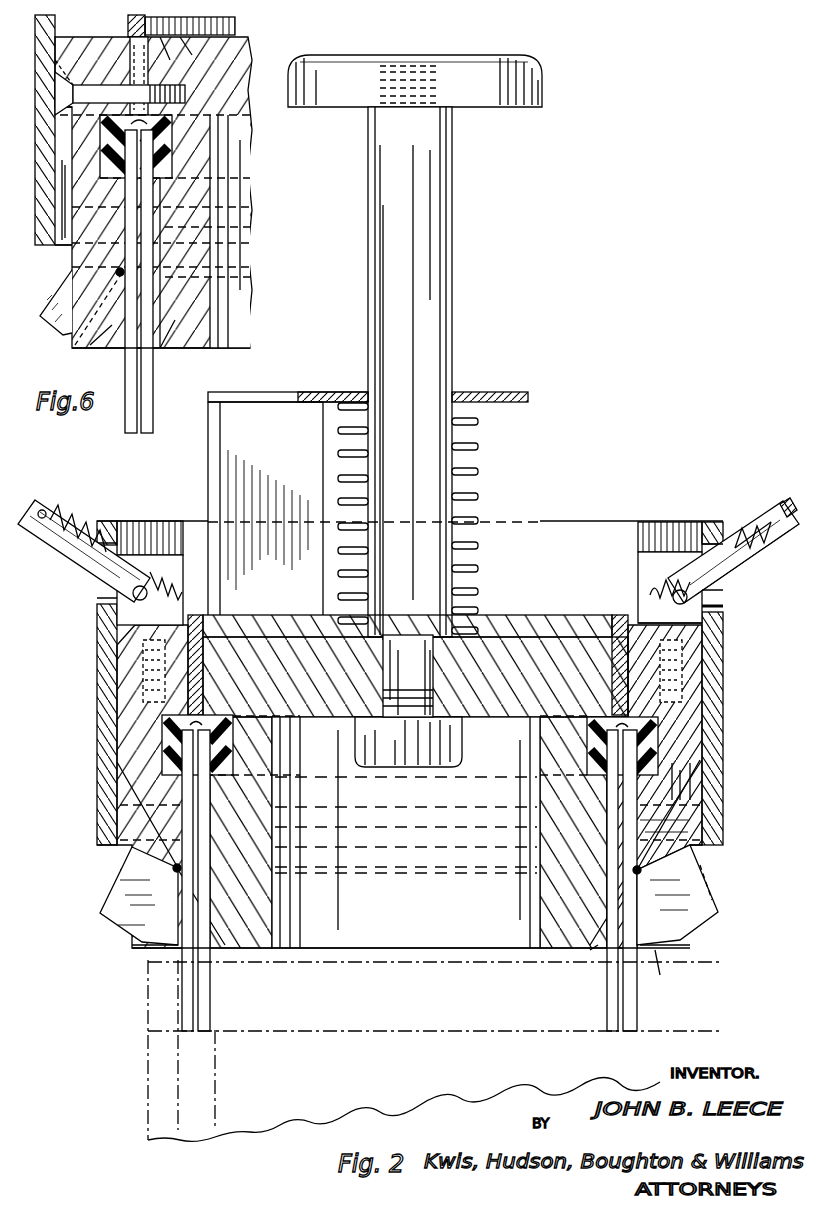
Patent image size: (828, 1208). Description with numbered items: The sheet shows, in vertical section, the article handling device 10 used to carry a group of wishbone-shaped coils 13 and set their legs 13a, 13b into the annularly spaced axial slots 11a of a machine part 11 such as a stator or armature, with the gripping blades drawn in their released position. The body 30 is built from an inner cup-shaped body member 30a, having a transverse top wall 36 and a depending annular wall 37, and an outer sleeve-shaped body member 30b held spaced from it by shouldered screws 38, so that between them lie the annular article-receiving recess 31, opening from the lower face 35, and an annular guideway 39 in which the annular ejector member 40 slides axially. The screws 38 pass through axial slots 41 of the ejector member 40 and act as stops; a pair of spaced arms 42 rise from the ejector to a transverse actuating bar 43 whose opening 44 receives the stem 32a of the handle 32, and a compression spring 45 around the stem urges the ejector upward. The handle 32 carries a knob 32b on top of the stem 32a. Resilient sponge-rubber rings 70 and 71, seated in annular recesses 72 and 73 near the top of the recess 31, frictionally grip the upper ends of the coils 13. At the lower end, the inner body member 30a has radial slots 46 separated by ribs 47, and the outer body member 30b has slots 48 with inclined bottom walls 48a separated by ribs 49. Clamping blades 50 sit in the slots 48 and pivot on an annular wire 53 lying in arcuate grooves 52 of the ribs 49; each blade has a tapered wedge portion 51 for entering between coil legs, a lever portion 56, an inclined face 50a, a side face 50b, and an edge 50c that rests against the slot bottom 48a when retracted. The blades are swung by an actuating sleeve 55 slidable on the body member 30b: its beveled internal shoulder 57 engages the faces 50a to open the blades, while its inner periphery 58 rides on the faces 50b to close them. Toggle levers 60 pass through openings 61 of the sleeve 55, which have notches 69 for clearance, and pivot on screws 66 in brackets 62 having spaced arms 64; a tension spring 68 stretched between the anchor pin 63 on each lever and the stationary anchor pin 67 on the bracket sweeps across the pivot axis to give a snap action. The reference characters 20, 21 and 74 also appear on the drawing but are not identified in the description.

In FIG. 2, the article handling device 10 is at (570, 521).
In FIG. 2, the machine part 11 is at (148, 1040).
In FIG. 2, the axial slots 11a is at (215, 1072).
In FIG. 6, the coils 13 is at (165, 222).
In FIG. 2, the coils 13 is at (606, 792).
In FIG. 6, the coil leg 13a is at (153, 420).
In FIG. 2, the coil leg 13a is at (607, 1012).
In FIG. 6, the coil leg 13b is at (128, 425).
In FIG. 2, the coil leg 13b is at (637, 1002).
In FIG. 2, the stem 20 is at (433, 668).
In FIG. 2, the stem head 21 is at (462, 748).
In FIG. 6, the body 30 is at (250, 25).
In FIG. 2, the body 30 is at (548, 616).
In FIG. 6, the inner body member 30a is at (252, 45).
In FIG. 2, the inner body member 30a is at (500, 616).
In FIG. 6, the outer body member 30b is at (75, 45).
In FIG. 2, the outer body member 30b is at (700, 668).
In FIG. 6, the article-receiving recess 31 is at (160, 262).
In FIG. 2, the article-receiving recess 31 is at (606, 886).
In FIG. 2, the handle 32 is at (542, 90).
In FIG. 2, the stem 32a is at (452, 265).
In FIG. 2, the knob 32b is at (482, 56).
In FIG. 6, the lower end face 35 is at (200, 349).
In FIG. 2, the lower end face 35 is at (560, 948).
In FIG. 6, the transverse top wall 36 is at (248, 84).
In FIG. 6, the depending annular wall 37 is at (232, 190).
In FIG. 6, the shouldered screws 38 is at (110, 78).
In FIG. 2, the annular guideway 39 is at (618, 680).
In FIG. 6, the annular ejector member 40 is at (150, 25).
In FIG. 2, the annular ejector member 40 is at (614, 658).
In FIG. 6, the axial slots 41 is at (148, 60).
In FIG. 2, the spaced arms 42 is at (208, 470).
In FIG. 2, the transverse actuating bar 43 is at (325, 392).
In FIG. 2, the opening 44 is at (490, 392).
In FIG. 2, the compression spring 45 is at (480, 447).
In FIG. 2, the radial slots 46 is at (595, 955).
In FIG. 6, the teeth or ribs 47 is at (163, 349).
In FIG. 2, the slots 48 is at (690, 940).
In FIG. 2, the inclined bottom walls 48a is at (700, 762).
In FIG. 6, the teeth or ribs 49 is at (110, 348).
In FIG. 6, the clamping blades 50 is at (60, 330).
In FIG. 2, the clamping blades 50 is at (125, 885).
In FIG. 2, the inclined side faces 50a is at (690, 822).
In FIG. 2, the side faces 50b is at (712, 884).
In FIG. 2, the edge portions 50c is at (632, 826).
In FIG. 2, the tapered wedge portions 51 is at (665, 972).
In FIG. 6, the arcuate grooves 52 is at (116, 270).
In FIG. 6, the annular pivot wire 53 is at (118, 280).
In FIG. 2, the annular pivot wire 53 is at (641, 870).
In FIG. 6, the actuating sleeve 55 is at (45, 168).
In FIG. 2, the actuating sleeve 55 is at (723, 684).
In FIG. 2, the lever portions 56 is at (690, 800).
In FIG. 6, the beveled internal shoulder 57 is at (62, 215).
In FIG. 6, the inner periphery 58 is at (55, 240).
In FIG. 2, the inner periphery 58 is at (712, 842).
In FIG. 2, the toggle levers 60 is at (745, 552).
In FIG. 2, the openings 61 is at (723, 592).
In FIG. 2, the brackets 62 is at (638, 612).
In FIG. 2, the transverse anchor pin 63 is at (802, 502).
In FIG. 2, the spaced arms 64 is at (660, 552).
In FIG. 2, the pivot screws 66 is at (700, 625).
In FIG. 2, the stationary anchor pin 67 is at (640, 590).
In FIG. 2, the tension spring 68 is at (738, 535).
In FIG. 2, the notches 69 is at (723, 607).
In FIG. 6, the resilient ring 70 is at (175, 125).
In FIG. 6, the resilient ring 71 is at (104, 150).
In FIG. 2, the resilient ring 71 is at (594, 762).
In FIG. 6, the annular recess 72 is at (170, 160).
In FIG. 2, the annular recess 72 is at (660, 736).
In FIG. 6, the annular recess 73 is at (104, 122).
In FIG. 2, the annular recess 73 is at (595, 734).
In FIG. 2, the seal housing 74 is at (660, 712).